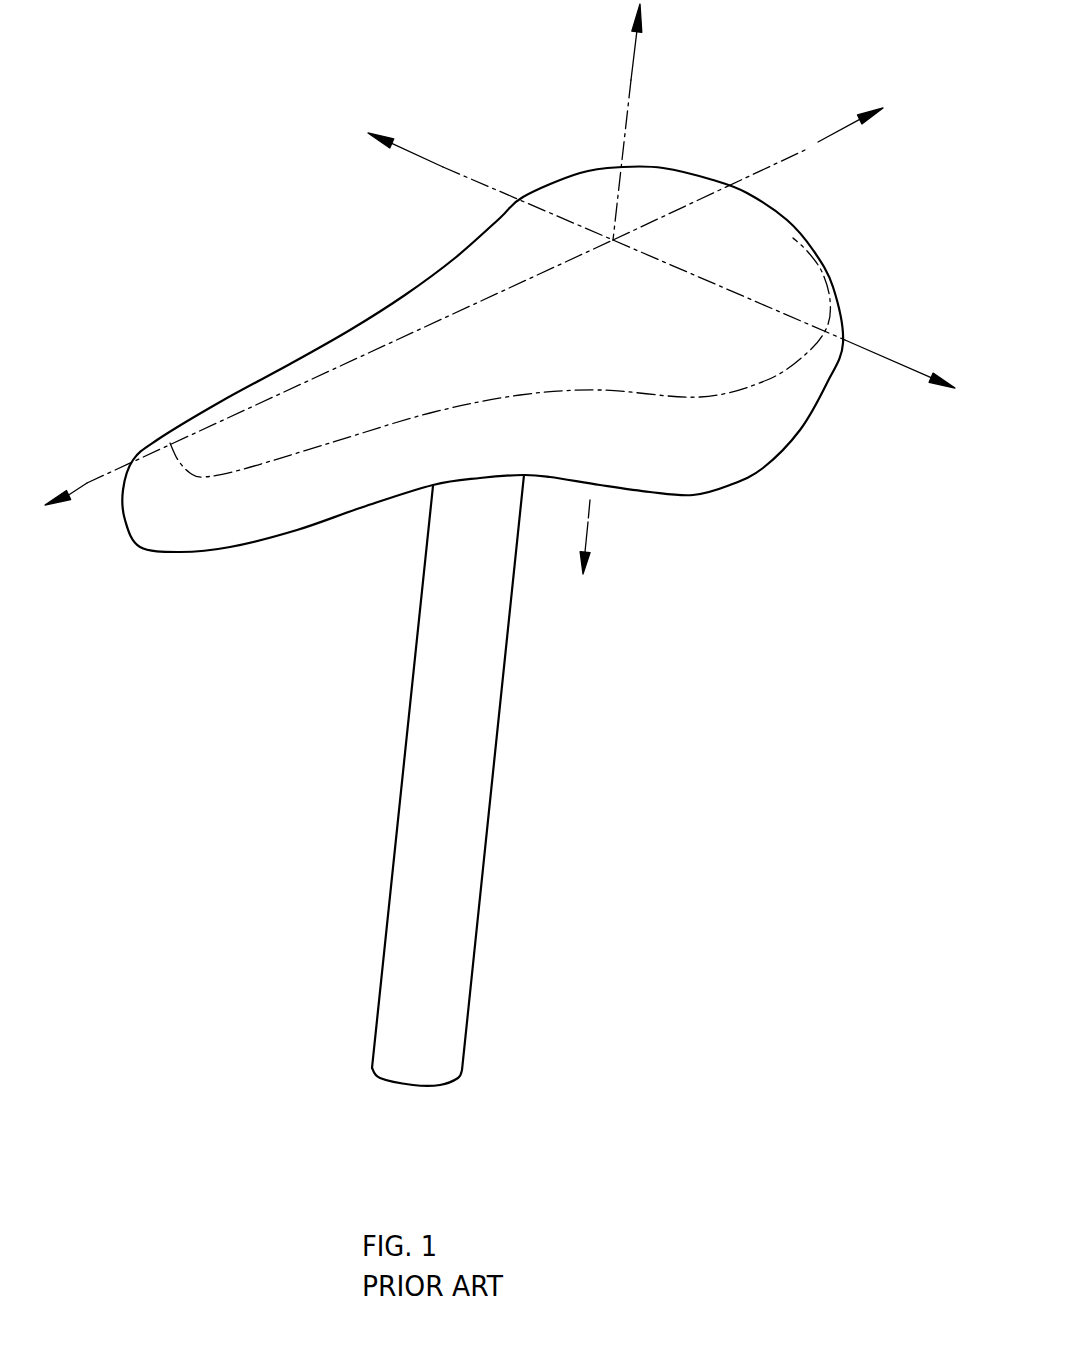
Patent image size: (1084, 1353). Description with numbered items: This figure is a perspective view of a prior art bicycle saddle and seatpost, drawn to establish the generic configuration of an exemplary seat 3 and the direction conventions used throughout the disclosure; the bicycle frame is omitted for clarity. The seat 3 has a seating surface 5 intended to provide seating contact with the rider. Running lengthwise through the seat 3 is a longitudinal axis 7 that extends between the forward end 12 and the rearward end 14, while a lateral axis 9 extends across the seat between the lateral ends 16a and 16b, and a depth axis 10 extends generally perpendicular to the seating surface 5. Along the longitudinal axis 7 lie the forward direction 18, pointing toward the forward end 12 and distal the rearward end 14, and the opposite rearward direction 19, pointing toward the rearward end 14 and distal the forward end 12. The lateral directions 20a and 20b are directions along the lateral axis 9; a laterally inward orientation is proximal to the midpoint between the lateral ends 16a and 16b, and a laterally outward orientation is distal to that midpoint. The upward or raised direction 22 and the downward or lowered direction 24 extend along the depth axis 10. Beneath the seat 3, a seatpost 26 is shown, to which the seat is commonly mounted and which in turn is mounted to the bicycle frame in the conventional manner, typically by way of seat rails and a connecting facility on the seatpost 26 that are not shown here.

The seat 3 is at (777, 278).
The seating surface 5 is at (482, 287).
The longitudinal axis 7 is at (350, 362).
The lateral axis 9 is at (793, 317).
The depth axis 10 is at (623, 118).
The forward end 12 is at (143, 523).
The rearward end 14 is at (708, 176).
The lateral end 16a is at (527, 194).
The lateral end 16b is at (813, 383).
The forward direction 18 is at (82, 485).
The rearward direction 19 is at (852, 126).
The lateral direction 20a is at (413, 154).
The lateral direction 20b is at (894, 361).
The upward or raised direction 22 is at (637, 35).
The downward or lowered direction 24 is at (592, 527).
The seatpost 26 is at (448, 597).